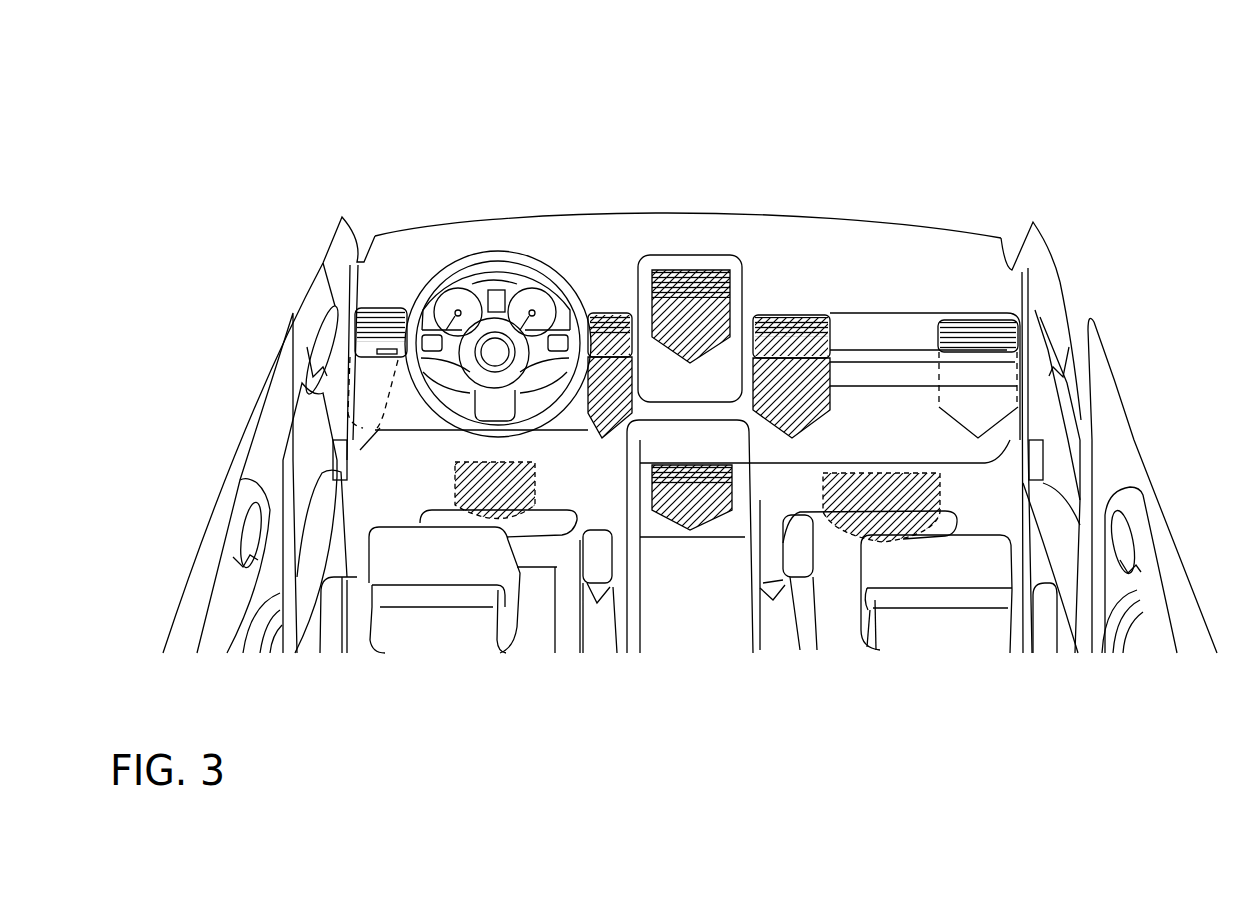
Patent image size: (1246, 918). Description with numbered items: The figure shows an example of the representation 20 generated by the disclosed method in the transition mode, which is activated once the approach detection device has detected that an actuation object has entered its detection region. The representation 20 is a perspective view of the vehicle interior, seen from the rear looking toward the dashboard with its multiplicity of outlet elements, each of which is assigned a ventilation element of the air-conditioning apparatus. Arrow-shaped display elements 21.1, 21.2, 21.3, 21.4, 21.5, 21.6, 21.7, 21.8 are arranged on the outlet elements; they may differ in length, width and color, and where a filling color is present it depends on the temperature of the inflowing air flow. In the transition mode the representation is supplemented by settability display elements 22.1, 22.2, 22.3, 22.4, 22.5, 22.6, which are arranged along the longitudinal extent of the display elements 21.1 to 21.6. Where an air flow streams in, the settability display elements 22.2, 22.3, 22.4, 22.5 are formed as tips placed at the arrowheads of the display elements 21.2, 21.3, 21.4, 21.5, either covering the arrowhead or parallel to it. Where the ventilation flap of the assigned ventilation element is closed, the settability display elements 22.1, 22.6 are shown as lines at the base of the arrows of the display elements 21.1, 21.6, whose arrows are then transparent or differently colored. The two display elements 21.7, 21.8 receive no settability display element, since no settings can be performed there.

The representation 20 is at (1113, 130).
The display element 21.1 is at (365, 450).
The display element 21.2 is at (598, 450).
The display element 21.3 is at (658, 355).
The display element 21.4 is at (687, 530).
The display element 21.5 is at (803, 443).
The display element 21.6 is at (1001, 433).
The display element 21.7 is at (474, 524).
The display element 21.8 is at (907, 540).
The settability display element 22.1 is at (383, 327).
The settability display element 22.2 is at (601, 413).
The settability display element 22.3 is at (674, 338).
The settability display element 22.4 is at (717, 507).
The settability display element 22.5 is at (780, 407).
The settability display element 22.6 is at (975, 320).